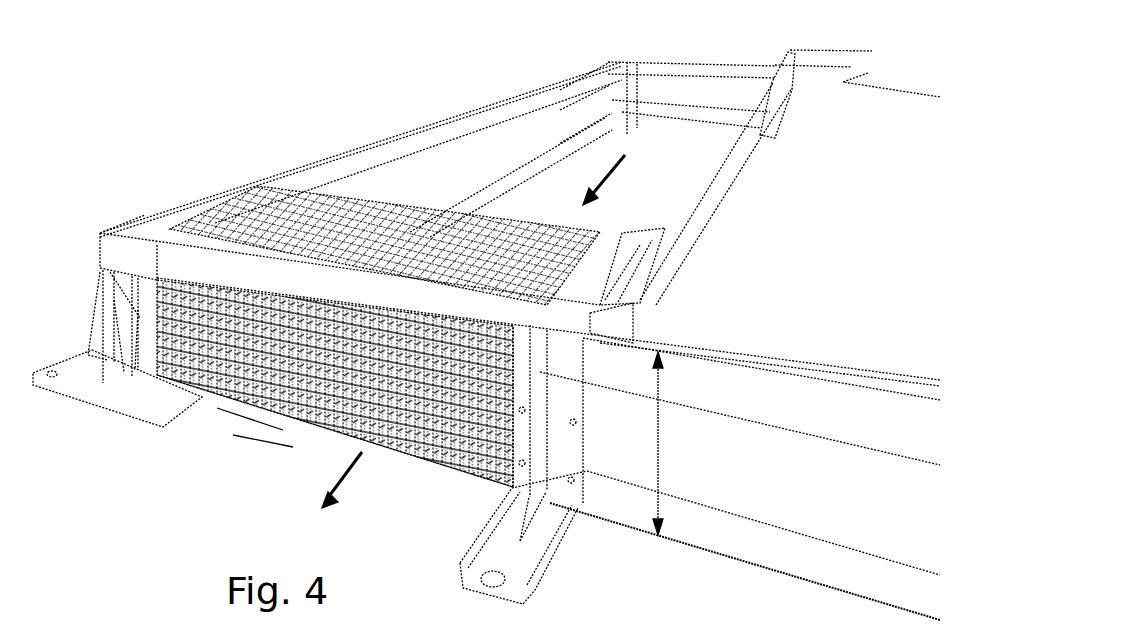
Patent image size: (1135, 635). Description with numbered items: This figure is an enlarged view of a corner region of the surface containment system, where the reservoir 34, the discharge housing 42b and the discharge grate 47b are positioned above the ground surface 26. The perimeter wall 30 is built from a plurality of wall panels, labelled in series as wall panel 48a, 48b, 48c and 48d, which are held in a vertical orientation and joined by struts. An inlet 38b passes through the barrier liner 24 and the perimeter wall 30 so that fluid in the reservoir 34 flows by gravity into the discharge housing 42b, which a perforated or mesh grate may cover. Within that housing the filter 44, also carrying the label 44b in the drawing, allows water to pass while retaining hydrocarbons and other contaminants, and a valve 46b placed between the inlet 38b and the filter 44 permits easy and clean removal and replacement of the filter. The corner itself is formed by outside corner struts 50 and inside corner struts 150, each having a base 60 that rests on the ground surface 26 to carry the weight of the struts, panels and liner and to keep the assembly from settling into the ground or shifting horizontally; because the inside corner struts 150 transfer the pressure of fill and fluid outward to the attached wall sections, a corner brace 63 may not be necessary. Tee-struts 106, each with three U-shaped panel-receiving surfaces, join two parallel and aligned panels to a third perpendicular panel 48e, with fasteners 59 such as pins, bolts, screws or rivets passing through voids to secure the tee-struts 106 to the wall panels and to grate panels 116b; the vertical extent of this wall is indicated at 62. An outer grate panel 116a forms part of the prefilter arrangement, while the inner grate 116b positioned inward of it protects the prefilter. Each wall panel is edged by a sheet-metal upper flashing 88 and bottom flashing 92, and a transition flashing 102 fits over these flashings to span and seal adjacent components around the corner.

The barrier liner 24 is at (628, 137).
The ground surface 26 is at (210, 427).
The perimeter wall 30 is at (413, 147).
The reservoir 34 is at (813, 105).
The inlet 38b is at (643, 215).
The discharge housing 42b is at (215, 218).
The filter 44 is at (205, 217).
The screen wires 44b is at (337, 373).
The valve 46b is at (600, 263).
The discharge grate 47b is at (347, 427).
The wall panel 48a is at (850, 502).
The wall panel 48b is at (495, 142).
The wall panel 48c is at (677, 100).
The rear post 48d is at (783, 77).
The wall panel 48e is at (645, 312).
The corner strut 50 is at (135, 403).
The fastener 59 is at (147, 310).
The base 60 is at (83, 383).
The beam height 62 is at (657, 432).
The corner brace 63 is at (102, 307).
The upper flashing 88 is at (797, 385).
The bottom flashing 92 is at (723, 537).
The transition flashing 102 is at (450, 203).
The tee-strut 106 is at (283, 157).
The outer grate panel 116a is at (590, 214).
The inner grate panel 116b is at (400, 443).
The inside corner strut 150 is at (765, 128).